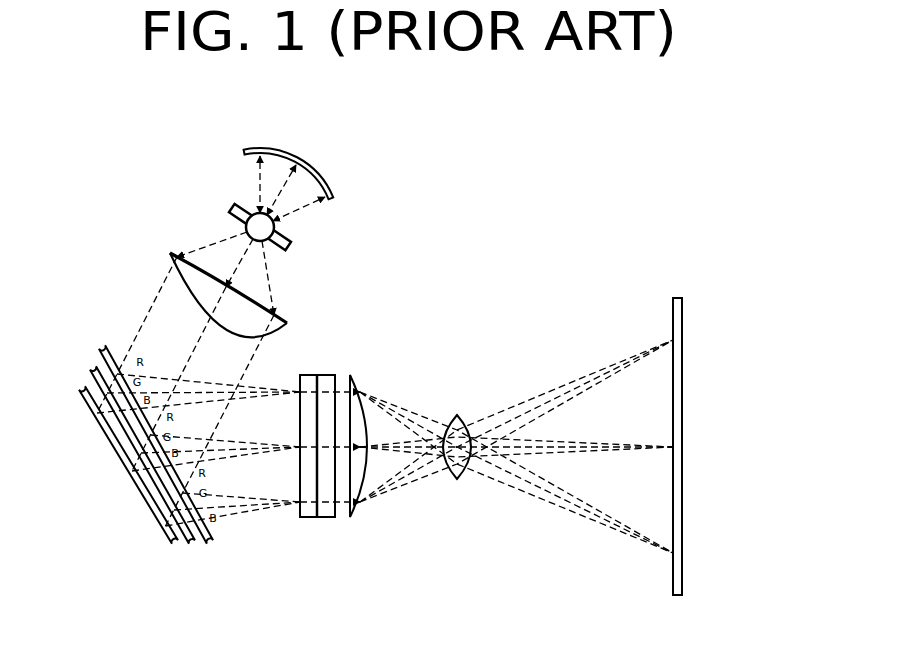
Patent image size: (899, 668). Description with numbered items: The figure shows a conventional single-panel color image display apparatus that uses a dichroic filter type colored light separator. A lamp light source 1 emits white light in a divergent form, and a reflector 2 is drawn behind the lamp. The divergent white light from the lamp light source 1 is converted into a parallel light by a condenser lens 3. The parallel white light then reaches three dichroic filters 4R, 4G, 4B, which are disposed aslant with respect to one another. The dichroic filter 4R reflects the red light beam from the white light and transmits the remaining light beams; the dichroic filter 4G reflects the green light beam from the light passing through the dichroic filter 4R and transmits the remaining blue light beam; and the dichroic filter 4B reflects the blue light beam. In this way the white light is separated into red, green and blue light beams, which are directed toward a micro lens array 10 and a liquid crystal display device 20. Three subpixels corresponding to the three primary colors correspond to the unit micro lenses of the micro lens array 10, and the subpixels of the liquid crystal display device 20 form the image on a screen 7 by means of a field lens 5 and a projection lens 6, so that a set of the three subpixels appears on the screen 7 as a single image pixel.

The lamp light source 1 is at (233, 207).
The reflector 2 is at (267, 150).
The condenser lens 3 is at (172, 253).
The dichroic filter 4R is at (102, 344).
The dichroic filter 4G is at (92, 366).
The dichroic filter 4B is at (81, 387).
The micro lens array 10 is at (303, 518).
The liquid crystal display device 20 is at (327, 518).
The field lens 5 is at (362, 483).
The projection lens 6 is at (457, 480).
The screen 7 is at (682, 577).